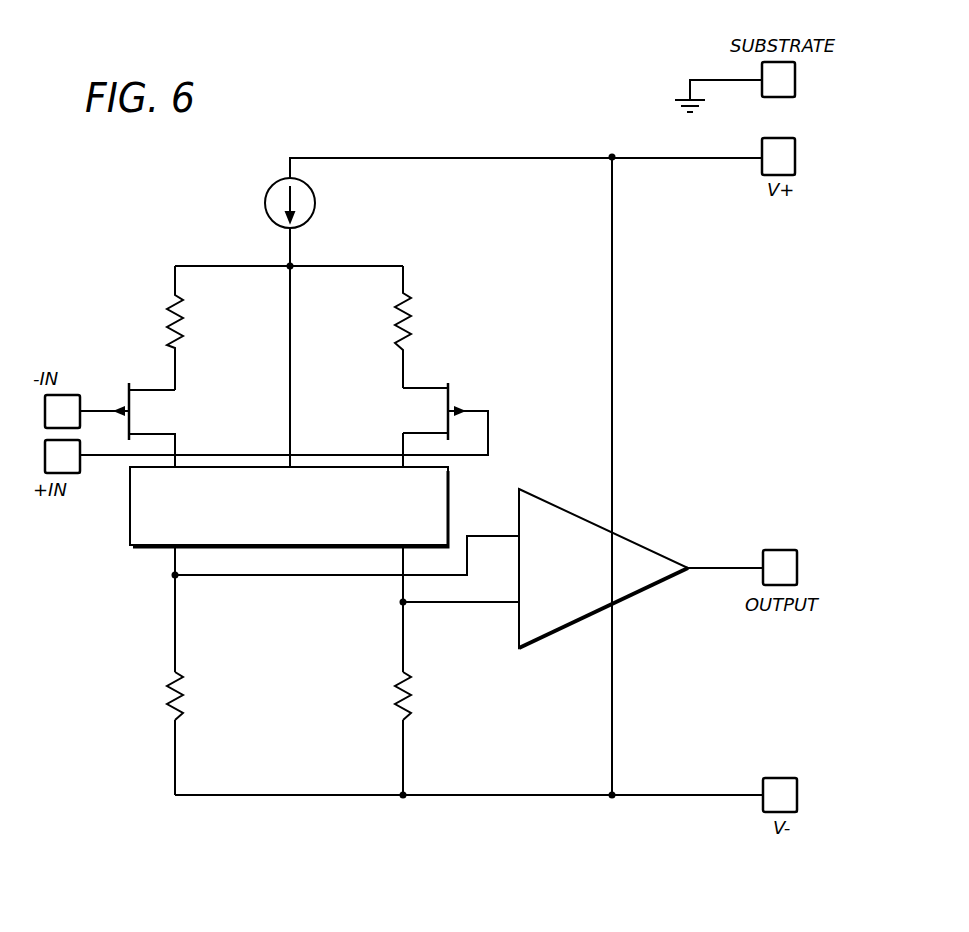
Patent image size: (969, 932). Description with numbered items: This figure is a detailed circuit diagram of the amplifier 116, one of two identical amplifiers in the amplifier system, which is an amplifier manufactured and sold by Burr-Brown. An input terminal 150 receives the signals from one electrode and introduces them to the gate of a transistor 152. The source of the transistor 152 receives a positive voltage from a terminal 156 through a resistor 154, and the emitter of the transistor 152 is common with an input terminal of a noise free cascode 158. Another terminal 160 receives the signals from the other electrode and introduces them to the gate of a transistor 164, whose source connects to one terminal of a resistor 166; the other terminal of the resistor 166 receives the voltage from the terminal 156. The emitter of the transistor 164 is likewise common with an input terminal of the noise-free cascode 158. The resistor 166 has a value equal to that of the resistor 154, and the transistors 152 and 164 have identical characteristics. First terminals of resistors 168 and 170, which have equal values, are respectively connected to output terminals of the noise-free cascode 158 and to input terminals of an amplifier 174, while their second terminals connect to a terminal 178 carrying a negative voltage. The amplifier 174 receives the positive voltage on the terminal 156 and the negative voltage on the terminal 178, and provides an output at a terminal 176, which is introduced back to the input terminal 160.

The amplifier 116 is at (428, 243).
The input terminal 150 is at (74, 473).
The transistor 152 is at (452, 398).
The resistor 154 is at (412, 318).
The terminal 156 is at (762, 168).
The noise free cascode 158 is at (450, 503).
The terminal 160 is at (74, 395).
The transistor 164 is at (133, 403).
The resistor 166 is at (172, 322).
The resistor 168 is at (410, 679).
The resistor 170 is at (180, 678).
The amplifier 174 is at (656, 590).
The terminal 176 is at (778, 550).
The terminal 178 is at (775, 778).